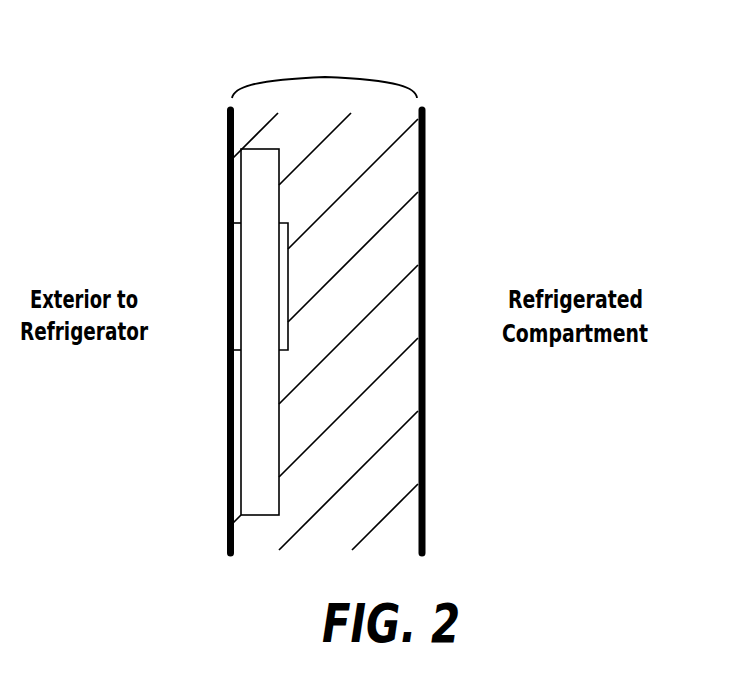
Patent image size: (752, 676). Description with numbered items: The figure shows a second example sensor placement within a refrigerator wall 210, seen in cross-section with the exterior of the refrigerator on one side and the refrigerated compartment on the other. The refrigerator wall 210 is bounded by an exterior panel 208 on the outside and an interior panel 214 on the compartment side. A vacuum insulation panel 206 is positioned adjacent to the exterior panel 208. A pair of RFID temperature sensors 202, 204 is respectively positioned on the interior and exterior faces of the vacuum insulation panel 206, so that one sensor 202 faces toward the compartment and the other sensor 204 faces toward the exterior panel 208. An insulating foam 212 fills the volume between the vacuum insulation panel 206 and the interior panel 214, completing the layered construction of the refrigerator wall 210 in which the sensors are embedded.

The RFID temperature sensor 202 is at (284, 262).
The RFID temperature sensor 204 is at (225, 293).
The vacuum insulation panel 206 is at (262, 418).
The exterior panel 208 is at (227, 525).
The refrigerator wall 210 is at (258, 82).
The insulating foam 212 is at (362, 277).
The interior panel 214 is at (428, 530).